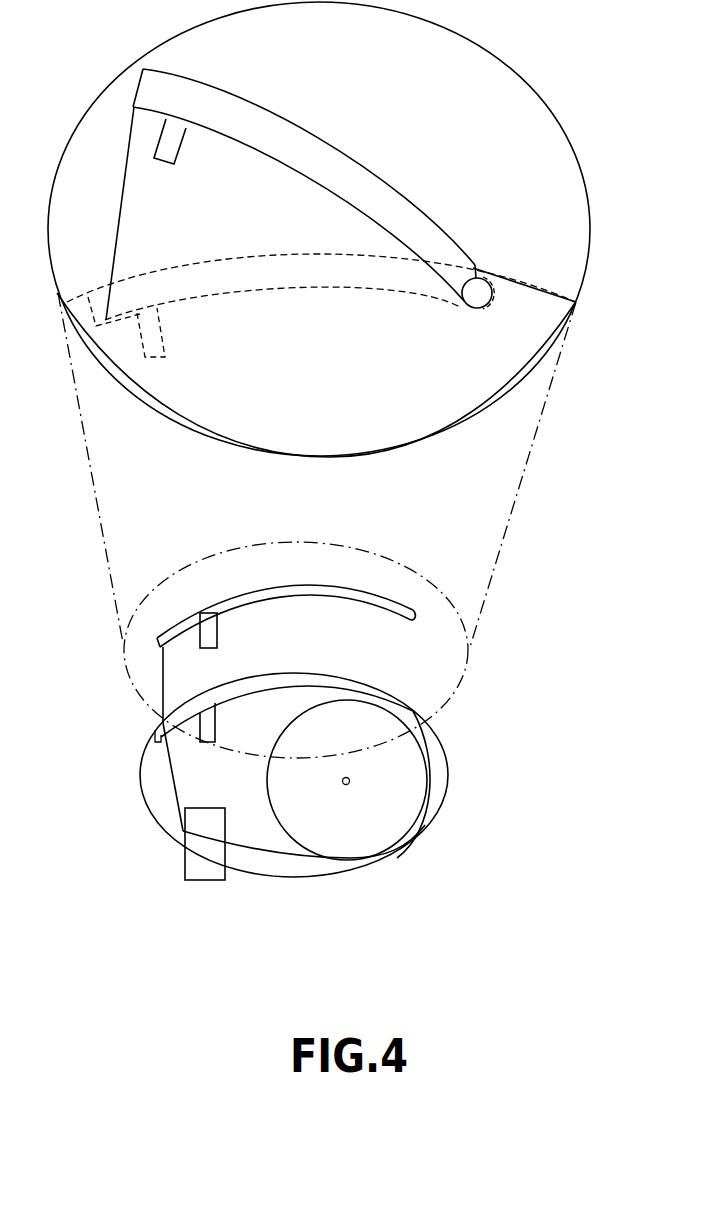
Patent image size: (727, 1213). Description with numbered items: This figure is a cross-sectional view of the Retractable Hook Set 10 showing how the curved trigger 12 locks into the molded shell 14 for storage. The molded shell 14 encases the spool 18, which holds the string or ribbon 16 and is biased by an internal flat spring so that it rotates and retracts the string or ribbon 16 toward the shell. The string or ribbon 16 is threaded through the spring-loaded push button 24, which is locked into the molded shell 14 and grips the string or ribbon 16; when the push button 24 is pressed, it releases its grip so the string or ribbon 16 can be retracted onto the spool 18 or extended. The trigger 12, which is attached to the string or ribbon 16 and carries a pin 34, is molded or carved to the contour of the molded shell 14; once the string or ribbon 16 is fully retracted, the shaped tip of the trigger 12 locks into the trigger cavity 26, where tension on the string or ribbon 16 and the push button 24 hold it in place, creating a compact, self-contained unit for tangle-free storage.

The Retractable Hook Set 10 is at (140, 817).
The trigger 12 is at (385, 203).
The molded shell 14 is at (225, 417).
The string or ribbon 16 is at (272, 858).
The spool 18 is at (383, 812).
The push button 24 is at (190, 883).
The trigger cavity 26 is at (232, 277).
The pin 34 is at (168, 145).